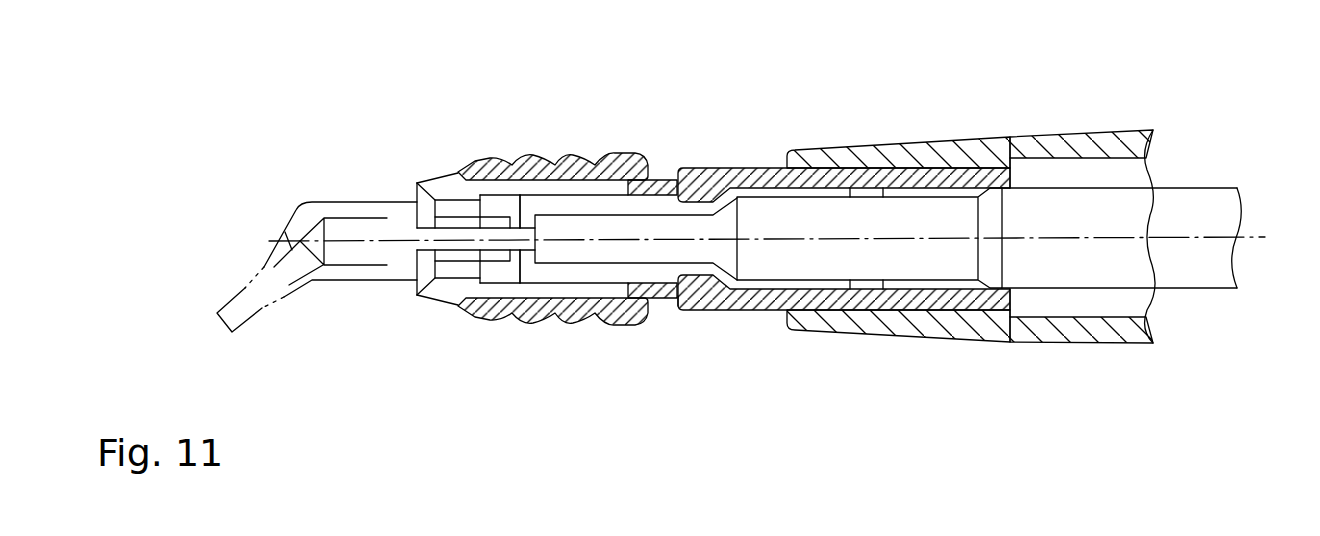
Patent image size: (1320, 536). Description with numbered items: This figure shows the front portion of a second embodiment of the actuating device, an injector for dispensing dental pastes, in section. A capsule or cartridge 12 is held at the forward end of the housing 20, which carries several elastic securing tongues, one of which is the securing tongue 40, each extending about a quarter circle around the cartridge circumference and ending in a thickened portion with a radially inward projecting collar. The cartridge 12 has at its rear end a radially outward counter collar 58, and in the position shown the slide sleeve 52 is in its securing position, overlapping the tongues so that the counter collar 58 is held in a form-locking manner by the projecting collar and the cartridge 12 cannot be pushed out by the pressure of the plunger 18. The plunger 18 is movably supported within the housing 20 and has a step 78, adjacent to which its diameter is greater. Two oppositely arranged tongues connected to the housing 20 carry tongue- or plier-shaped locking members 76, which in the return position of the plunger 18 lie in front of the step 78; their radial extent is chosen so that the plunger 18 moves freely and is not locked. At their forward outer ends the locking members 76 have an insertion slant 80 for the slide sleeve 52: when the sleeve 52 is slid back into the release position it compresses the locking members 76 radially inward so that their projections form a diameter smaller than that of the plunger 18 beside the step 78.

The cartridge 12 is at (353, 216).
The plunger 18 is at (933, 252).
The housing 20 is at (1120, 143).
The securing tongue 40 is at (453, 286).
The slide sleeve 52 is at (628, 160).
The counter collar 58 is at (498, 203).
The locking member 76 is at (822, 294).
The step 78 is at (724, 213).
The insertion slant 80 is at (677, 309).